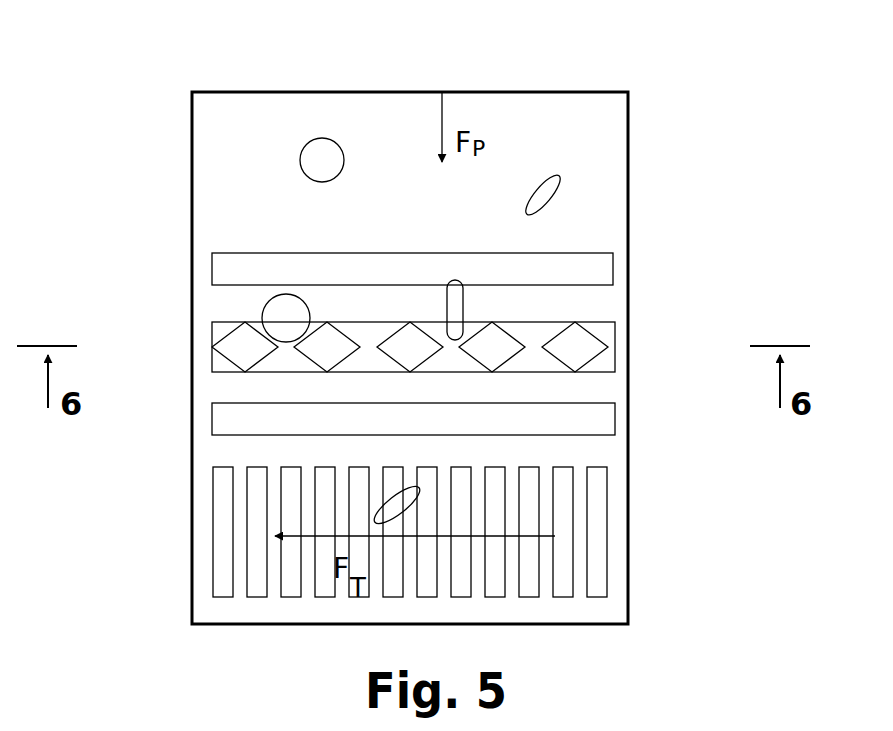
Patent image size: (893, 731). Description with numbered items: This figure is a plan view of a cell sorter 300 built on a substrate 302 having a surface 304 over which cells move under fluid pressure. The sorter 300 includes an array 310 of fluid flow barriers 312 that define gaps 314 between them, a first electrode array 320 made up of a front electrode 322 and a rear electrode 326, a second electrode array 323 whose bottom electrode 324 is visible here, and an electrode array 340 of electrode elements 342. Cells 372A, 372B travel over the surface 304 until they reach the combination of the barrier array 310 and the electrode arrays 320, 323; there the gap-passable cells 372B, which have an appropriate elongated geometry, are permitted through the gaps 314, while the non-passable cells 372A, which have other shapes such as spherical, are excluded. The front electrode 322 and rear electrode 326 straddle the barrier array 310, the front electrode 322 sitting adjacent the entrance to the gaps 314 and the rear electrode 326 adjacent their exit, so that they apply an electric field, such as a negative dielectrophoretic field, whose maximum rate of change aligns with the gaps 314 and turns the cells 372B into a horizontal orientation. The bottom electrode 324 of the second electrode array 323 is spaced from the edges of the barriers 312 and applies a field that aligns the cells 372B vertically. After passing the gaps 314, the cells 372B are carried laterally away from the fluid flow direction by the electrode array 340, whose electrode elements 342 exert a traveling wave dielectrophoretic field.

The sorter 300 is at (322, 70).
The substrate 302 is at (228, 92).
The surface 304 is at (282, 143).
The array of fluid flow barriers 310 is at (480, 358).
The fluid flow barrier 312 is at (615, 372).
The gap 314 is at (377, 357).
The first electrode array 320 is at (620, 274).
The front electrode 322 is at (613, 265).
The second electrode array 323 is at (204, 358).
The bottom electrode 324 is at (212, 330).
The rear electrode 326 is at (615, 417).
The electrode array 340 is at (614, 531).
The electrode element 342 is at (607, 493).
The non-passable cell 372A is at (322, 182).
The gap-passable cell 372B is at (555, 197).